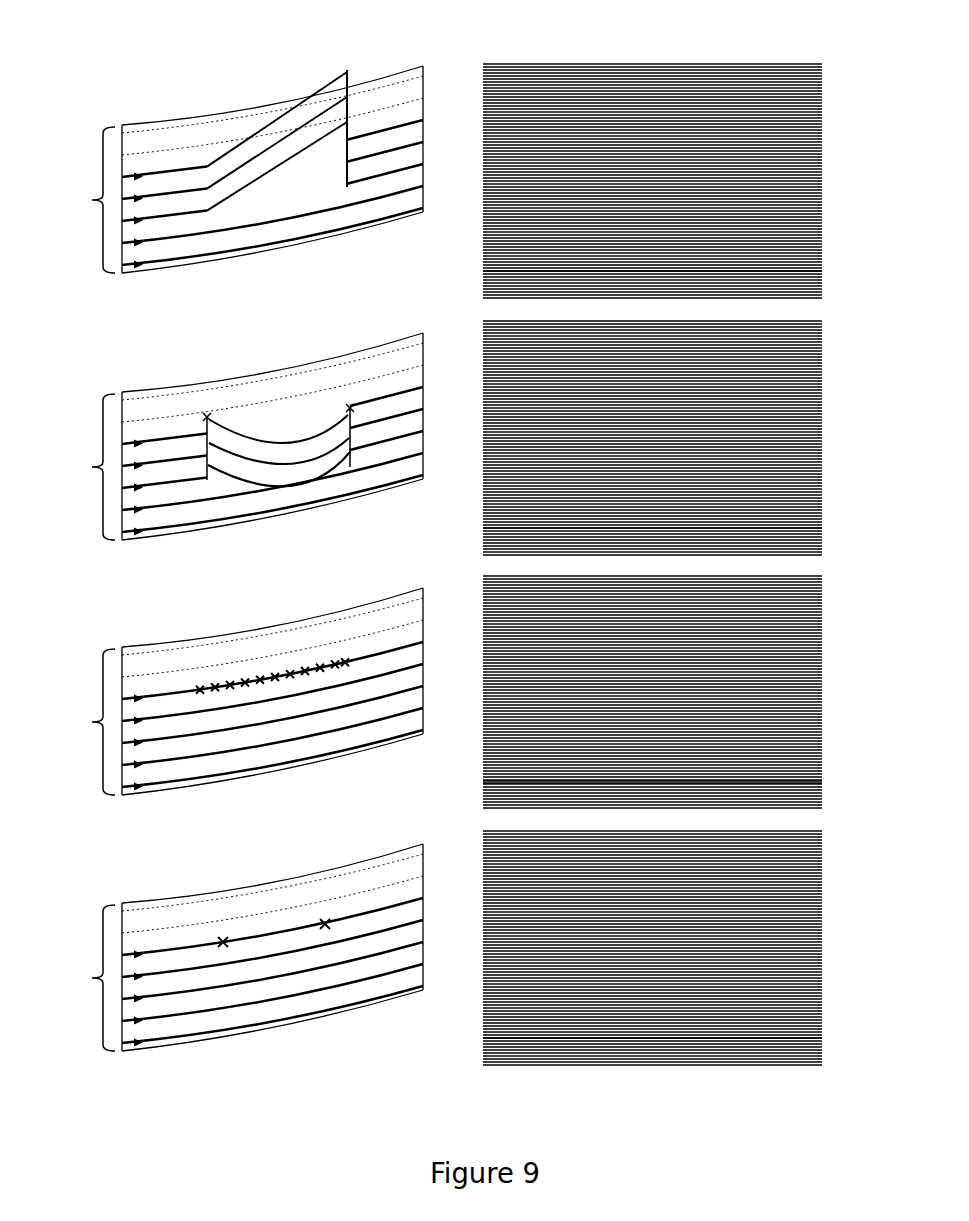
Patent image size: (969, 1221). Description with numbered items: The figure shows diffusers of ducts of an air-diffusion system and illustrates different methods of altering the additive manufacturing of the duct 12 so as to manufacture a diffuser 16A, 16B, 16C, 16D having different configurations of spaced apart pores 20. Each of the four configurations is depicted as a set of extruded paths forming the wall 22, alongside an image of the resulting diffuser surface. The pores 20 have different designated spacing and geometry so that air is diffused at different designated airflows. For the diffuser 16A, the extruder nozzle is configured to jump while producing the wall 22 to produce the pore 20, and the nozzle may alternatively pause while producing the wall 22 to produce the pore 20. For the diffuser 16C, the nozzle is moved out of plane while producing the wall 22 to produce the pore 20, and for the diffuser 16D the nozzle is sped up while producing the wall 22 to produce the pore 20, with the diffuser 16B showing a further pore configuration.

The duct 12 is at (198, 59).
The diffuser 16A is at (830, 63).
The diffuser 16B is at (830, 320).
The diffuser 16C is at (830, 575).
The diffuser 16D is at (830, 830).
The pore 20 is at (227, 163).
The wall 22 is at (175, 171).